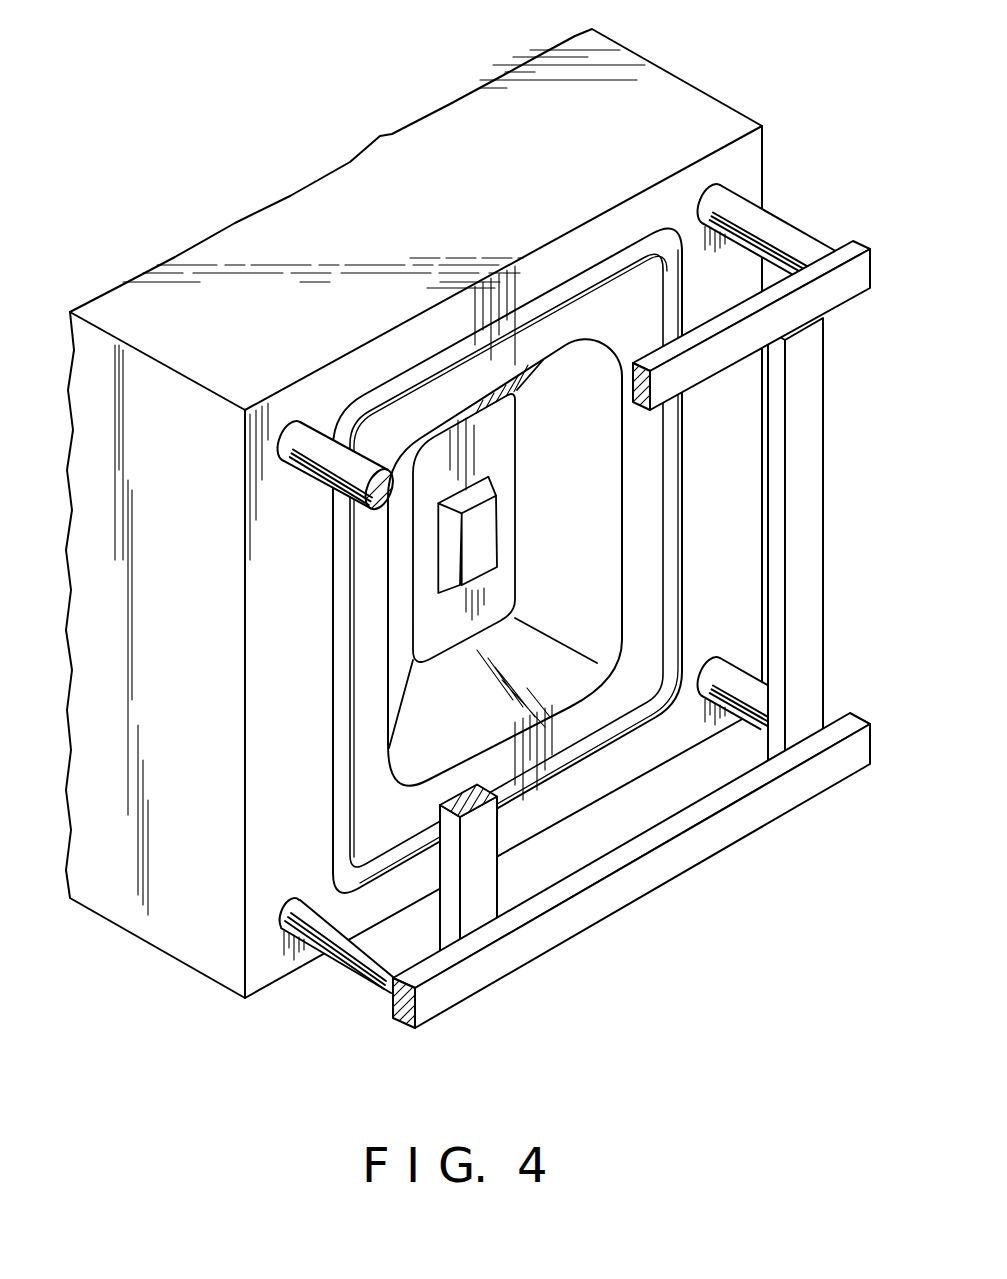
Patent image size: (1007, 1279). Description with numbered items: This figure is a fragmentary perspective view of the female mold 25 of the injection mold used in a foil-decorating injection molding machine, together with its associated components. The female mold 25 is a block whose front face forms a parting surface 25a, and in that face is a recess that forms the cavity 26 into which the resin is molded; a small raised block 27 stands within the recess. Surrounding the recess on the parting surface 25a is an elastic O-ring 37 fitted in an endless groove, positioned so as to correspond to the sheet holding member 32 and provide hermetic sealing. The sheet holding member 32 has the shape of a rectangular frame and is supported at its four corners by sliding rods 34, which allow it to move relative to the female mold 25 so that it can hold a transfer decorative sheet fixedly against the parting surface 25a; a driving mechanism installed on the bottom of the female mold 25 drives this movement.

The female mold 25 is at (698, 92).
The parting surface 25a is at (577, 246).
The cavity 26 is at (600, 450).
The boss in recess 27 is at (488, 537).
The sheet holding member 32 is at (812, 467).
The sliding rods 34 is at (784, 230).
The elastic O-ring 37 is at (345, 703).